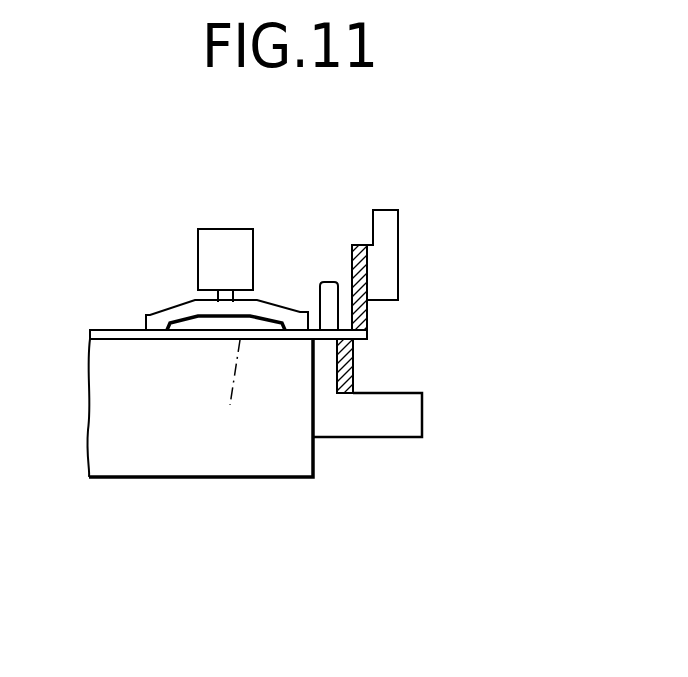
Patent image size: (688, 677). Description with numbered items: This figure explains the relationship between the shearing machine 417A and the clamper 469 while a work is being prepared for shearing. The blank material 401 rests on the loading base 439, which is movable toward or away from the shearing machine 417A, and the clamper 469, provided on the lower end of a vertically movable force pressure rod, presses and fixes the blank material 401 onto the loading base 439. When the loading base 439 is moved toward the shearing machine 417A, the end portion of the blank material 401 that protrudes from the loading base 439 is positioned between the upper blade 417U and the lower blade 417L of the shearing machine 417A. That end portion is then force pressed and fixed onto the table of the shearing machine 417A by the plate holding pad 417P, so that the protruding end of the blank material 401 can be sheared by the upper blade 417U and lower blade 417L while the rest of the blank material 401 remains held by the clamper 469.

The blank material 401 is at (105, 329).
The clamper 469 is at (284, 298).
The plate holding pad 417P is at (330, 282).
The first shearing machine 417A is at (428, 208).
The upper blade 417U is at (365, 278).
The lower blade 417L is at (354, 362).
The loading base 439 is at (213, 478).